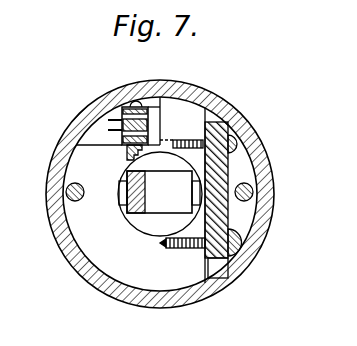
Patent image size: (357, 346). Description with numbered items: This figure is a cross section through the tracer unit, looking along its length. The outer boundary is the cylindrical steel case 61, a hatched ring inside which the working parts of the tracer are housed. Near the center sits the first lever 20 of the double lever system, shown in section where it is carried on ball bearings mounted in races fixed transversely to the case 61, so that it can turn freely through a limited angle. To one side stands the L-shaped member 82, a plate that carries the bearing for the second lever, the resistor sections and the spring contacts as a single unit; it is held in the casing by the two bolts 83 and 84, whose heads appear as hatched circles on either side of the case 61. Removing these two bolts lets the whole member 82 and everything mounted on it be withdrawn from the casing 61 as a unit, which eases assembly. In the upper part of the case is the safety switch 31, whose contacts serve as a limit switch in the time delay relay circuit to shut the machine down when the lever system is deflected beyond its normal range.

The cylindrical steel case 61 is at (97, 282).
The L-shaped member 82 is at (228, 165).
The bolt 83 is at (250, 187).
The bolt 84 is at (67, 191).
The first lever 20 is at (165, 203).
The safety switch 31 is at (113, 118).